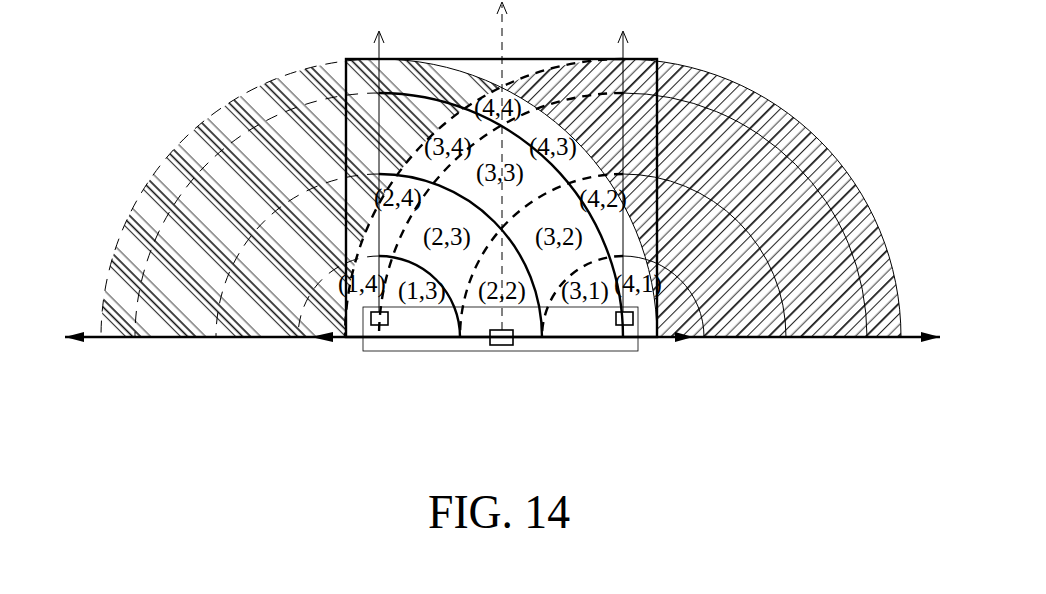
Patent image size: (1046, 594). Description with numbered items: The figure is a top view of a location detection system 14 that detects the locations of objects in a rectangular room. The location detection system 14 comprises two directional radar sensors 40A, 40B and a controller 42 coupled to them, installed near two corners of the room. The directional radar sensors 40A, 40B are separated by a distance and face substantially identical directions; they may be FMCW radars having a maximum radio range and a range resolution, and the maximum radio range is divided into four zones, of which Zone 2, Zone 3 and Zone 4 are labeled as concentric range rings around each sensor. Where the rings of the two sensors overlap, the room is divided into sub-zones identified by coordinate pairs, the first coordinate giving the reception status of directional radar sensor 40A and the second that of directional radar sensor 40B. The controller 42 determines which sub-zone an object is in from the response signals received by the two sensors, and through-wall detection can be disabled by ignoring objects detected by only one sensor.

The location detection system 14 is at (499, 224).
The directional radar sensor 40A is at (378, 325).
The directional radar sensor 40B is at (623, 325).
The controller 42 is at (500, 345).
The Zone 2 is at (704, 255).
The Zone 3 is at (745, 215).
The Zone 4 is at (762, 198).